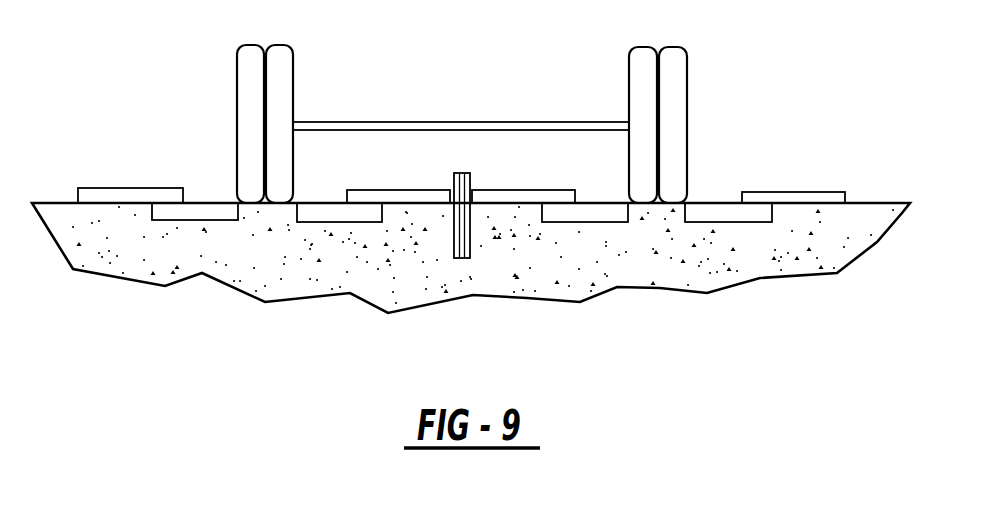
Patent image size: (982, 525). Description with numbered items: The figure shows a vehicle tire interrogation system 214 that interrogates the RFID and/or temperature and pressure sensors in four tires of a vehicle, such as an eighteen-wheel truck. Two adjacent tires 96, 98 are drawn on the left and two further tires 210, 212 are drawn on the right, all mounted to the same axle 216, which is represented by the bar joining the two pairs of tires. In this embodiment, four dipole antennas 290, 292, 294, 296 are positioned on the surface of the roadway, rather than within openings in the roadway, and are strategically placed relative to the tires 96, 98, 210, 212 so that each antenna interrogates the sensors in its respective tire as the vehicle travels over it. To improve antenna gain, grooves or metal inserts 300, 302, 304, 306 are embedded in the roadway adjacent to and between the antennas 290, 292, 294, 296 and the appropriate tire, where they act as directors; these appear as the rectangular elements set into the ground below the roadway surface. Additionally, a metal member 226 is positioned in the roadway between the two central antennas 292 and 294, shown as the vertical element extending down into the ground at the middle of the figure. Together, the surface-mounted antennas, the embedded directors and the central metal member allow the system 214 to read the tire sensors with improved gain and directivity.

The tire 96 is at (250, 63).
The tire 98 is at (282, 88).
The tire 210 is at (640, 60).
The tire 212 is at (672, 65).
The vehicle tire interrogation system 214 is at (722, 85).
The axle 216 is at (465, 127).
The metal member 226 is at (468, 233).
The dipole antenna 290 is at (125, 195).
The dipole antenna 292 is at (427, 197).
The dipole antenna 294 is at (520, 197).
The dipole antenna 296 is at (797, 192).
The groove or metal insert 300 is at (178, 213).
The groove or metal insert 302 is at (323, 213).
The groove or metal insert 304 is at (595, 217).
The groove or metal insert 306 is at (735, 218).